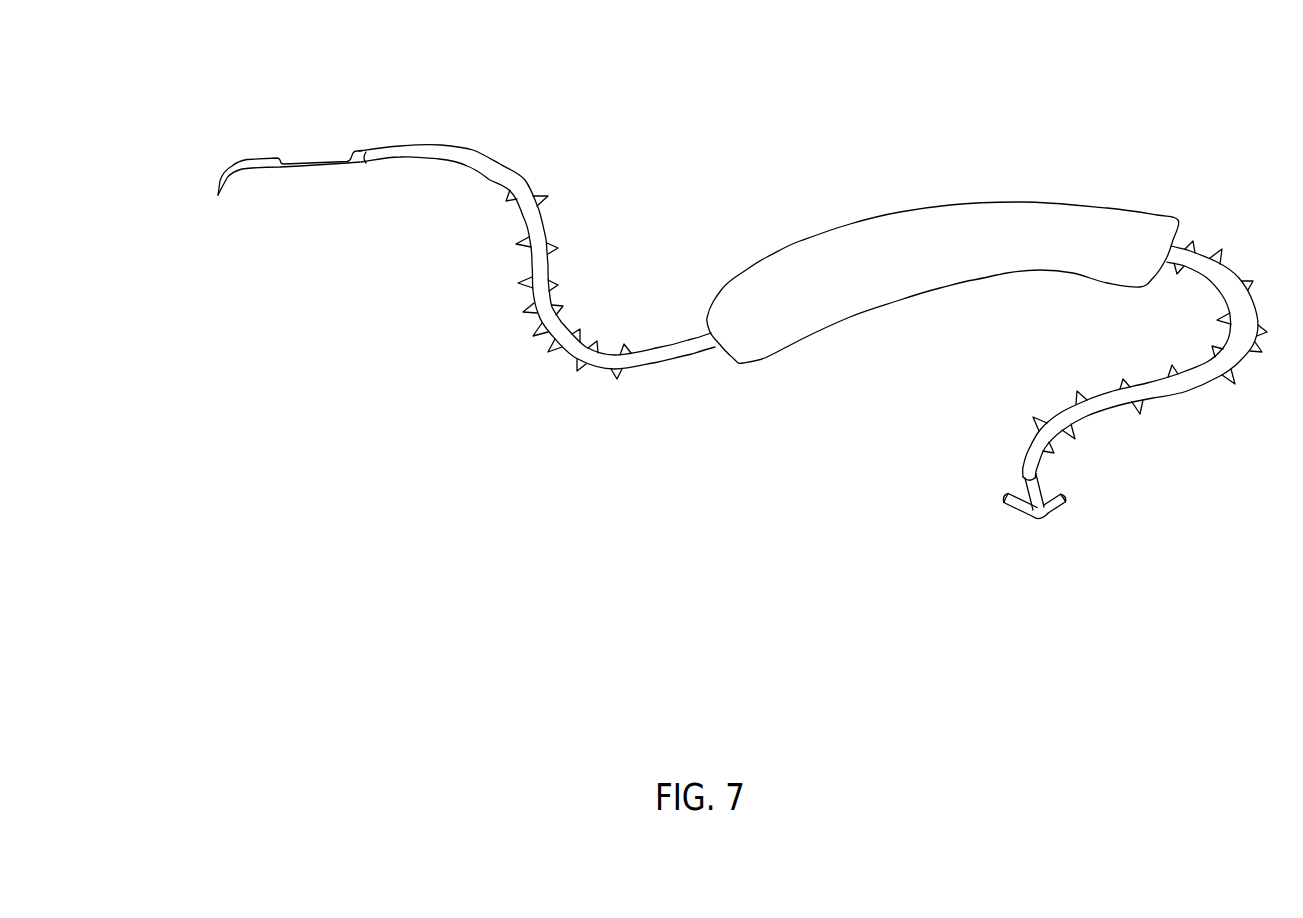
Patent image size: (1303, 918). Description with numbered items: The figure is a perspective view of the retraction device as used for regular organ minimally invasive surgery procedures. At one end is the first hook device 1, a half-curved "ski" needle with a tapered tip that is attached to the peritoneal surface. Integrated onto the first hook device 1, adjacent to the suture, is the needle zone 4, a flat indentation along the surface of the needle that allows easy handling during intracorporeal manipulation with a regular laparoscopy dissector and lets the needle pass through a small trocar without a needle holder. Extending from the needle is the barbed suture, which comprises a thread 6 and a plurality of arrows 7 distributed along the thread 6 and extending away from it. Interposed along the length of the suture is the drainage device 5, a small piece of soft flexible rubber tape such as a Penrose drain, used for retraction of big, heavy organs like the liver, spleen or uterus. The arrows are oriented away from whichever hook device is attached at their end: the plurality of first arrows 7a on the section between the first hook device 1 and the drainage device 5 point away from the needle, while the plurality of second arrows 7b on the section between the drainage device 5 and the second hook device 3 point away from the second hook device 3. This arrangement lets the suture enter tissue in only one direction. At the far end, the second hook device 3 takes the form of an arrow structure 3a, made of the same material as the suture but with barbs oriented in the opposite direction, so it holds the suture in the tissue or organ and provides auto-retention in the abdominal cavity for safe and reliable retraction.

The first hook device 1 is at (231, 168).
The needle zone 4 is at (311, 151).
The thread 6 is at (493, 165).
The drainage device 5 is at (901, 219).
The plurality of arrows 7 is at (896, 331).
The plurality of first arrows 7a is at (550, 242).
The plurality of second arrows 7b is at (1186, 394).
The second hook device 3 is at (1061, 537).
The arrow structure 3a is at (1041, 521).